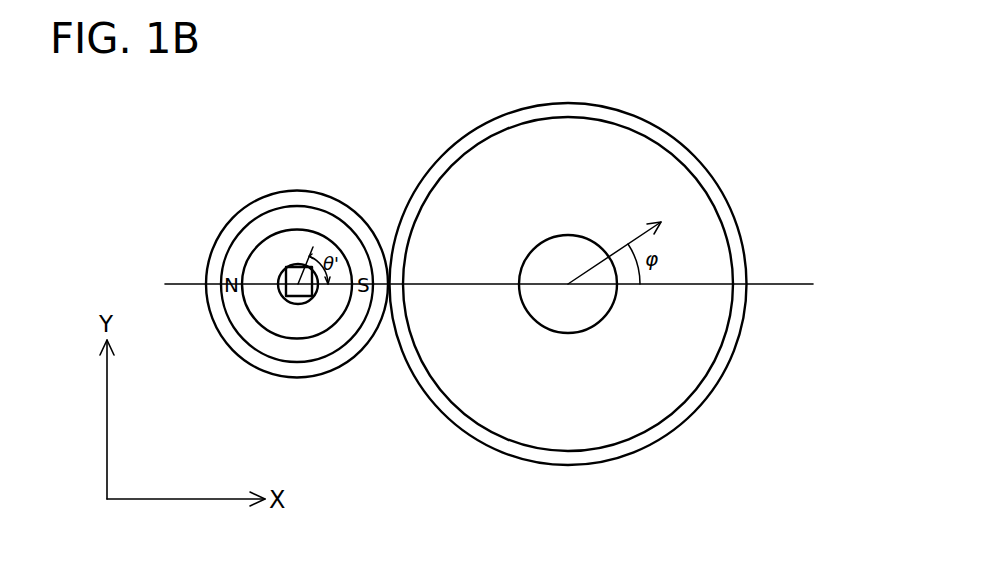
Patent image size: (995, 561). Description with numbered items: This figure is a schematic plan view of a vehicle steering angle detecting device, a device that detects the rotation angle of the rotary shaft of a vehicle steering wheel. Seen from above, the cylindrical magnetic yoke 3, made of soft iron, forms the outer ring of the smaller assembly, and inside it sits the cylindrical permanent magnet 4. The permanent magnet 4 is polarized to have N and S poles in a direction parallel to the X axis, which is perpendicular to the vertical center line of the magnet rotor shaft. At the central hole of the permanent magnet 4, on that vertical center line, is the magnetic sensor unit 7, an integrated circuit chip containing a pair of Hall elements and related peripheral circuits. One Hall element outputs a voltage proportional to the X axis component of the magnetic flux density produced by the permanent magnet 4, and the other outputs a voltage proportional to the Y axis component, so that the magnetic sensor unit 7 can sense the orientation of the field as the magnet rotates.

The cylindrical magnetic yoke 3 is at (222, 245).
The cylindrical permanent magnet 4 is at (328, 222).
The magnetic sensor unit 7 is at (293, 273).